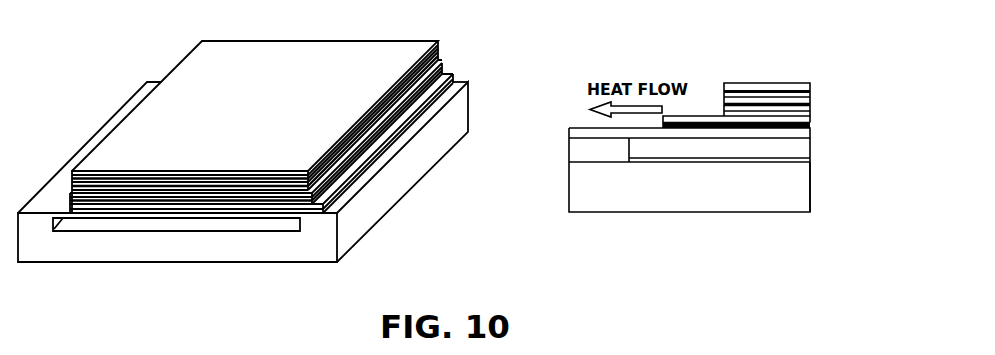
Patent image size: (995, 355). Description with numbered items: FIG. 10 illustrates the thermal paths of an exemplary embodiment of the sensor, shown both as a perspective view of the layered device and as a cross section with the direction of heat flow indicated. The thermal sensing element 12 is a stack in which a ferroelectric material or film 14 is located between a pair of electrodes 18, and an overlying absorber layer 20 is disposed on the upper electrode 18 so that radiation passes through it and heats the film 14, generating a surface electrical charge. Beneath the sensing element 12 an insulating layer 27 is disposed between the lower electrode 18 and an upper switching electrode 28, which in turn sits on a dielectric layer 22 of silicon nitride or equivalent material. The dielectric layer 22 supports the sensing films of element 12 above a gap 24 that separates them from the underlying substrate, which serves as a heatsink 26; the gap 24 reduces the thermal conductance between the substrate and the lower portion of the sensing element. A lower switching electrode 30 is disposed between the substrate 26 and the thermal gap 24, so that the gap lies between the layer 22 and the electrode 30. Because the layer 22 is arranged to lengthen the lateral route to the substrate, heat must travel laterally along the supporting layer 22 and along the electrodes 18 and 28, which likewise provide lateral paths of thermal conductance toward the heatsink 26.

The thermal sensing element 12 is at (215, 70).
The ferroelectric material or film 14 is at (811, 102).
The electrodes 18 is at (720, 107).
The absorber layer 20 is at (767, 83).
The dielectric layer 22 is at (805, 131).
The gap 24 is at (757, 144).
The heatsink 26 is at (685, 184).
The insulating layer 27 is at (707, 117).
The upper switching electrode 28 is at (811, 126).
The lower switching electrode 30 is at (797, 163).